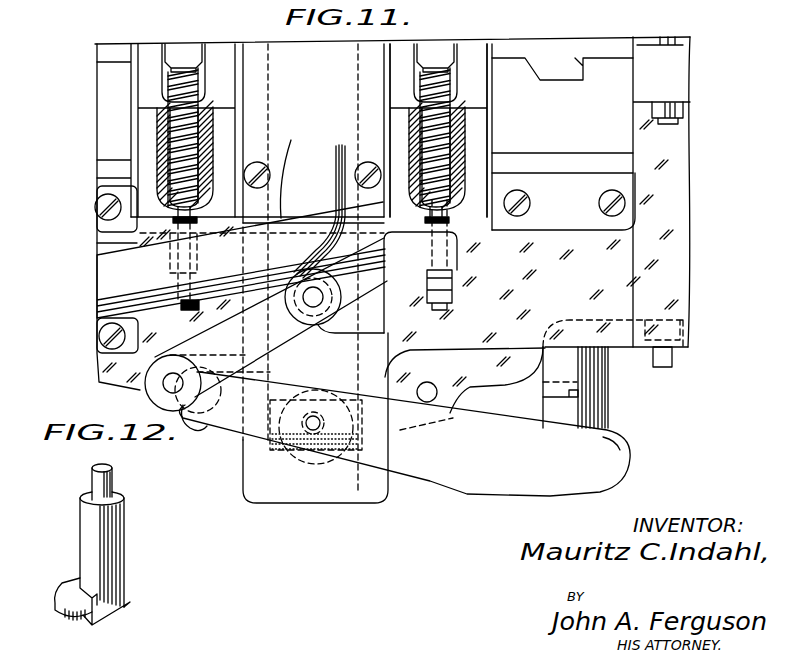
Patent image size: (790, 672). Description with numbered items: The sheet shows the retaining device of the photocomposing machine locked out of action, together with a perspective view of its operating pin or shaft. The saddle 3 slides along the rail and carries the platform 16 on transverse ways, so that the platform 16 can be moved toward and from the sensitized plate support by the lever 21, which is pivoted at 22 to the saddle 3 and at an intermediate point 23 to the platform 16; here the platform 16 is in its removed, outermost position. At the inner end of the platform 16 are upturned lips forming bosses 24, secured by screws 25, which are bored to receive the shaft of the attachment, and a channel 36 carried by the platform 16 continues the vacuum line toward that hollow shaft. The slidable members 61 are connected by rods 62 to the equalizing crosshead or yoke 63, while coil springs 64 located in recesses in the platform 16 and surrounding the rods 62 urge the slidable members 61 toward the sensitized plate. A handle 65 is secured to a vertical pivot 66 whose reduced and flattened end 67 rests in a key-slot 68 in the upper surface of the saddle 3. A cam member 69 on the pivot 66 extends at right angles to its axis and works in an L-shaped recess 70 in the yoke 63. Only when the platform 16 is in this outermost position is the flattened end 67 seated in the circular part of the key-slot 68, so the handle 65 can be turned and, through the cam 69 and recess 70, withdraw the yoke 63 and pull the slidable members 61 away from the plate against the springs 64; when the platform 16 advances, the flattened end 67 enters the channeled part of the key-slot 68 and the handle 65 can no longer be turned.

In FIG. 11, the saddle 3 is at (497, 373).
In FIG. 11, the platform 16 is at (665, 284).
In FIG. 11, the lever 21 is at (631, 453).
In FIG. 11, the pivot 22 is at (207, 412).
In FIG. 11, the intermediate point 23 is at (311, 431).
In FIG. 11, the bosses 24 is at (570, 70).
In FIG. 11, the screws 25 is at (95, 207).
In FIG. 11, the channel 36 is at (93, 299).
In FIG. 11, the slidable members 61 is at (182, 53).
In FIG. 11, the rods 62 is at (190, 312).
In FIG. 11, the equalizing crosshead or yoke 63 is at (388, 307).
In FIG. 11, the coil springs 64 is at (197, 88).
In FIG. 11, the handle 65 is at (157, 396).
In FIG. 11, the vertical pivot 66 is at (373, 293).
In FIG. 12, the vertical pivot 66 is at (118, 560).
In FIG. 12, the reduced and flattened end 67 is at (98, 620).
In FIG. 11, the key-slot 68 is at (313, 217).
In FIG. 11, the cam member 69 is at (310, 338).
In FIG. 12, the cam member 69 is at (63, 583).
In FIG. 11, the recess 70 is at (384, 258).